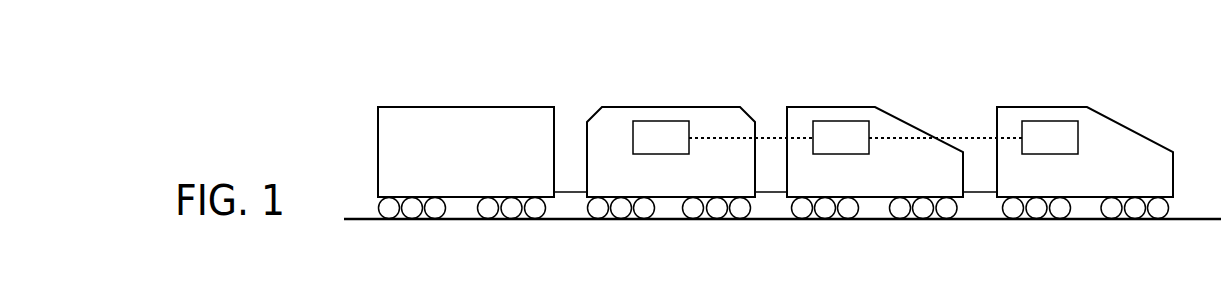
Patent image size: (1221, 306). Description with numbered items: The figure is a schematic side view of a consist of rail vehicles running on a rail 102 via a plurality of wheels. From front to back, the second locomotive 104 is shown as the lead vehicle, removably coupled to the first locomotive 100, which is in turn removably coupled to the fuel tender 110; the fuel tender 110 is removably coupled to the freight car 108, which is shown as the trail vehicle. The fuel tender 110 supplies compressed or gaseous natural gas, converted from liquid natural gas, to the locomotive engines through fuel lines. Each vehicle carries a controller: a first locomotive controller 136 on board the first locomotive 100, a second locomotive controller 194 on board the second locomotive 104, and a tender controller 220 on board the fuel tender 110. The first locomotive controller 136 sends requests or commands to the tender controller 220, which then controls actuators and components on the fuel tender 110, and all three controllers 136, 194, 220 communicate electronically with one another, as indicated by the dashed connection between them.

The first locomotive 100 is at (842, 106).
The rail 102 is at (970, 221).
The second locomotive 104 is at (1025, 106).
The freight car 108 is at (441, 106).
The fuel tender 110 is at (657, 106).
The first locomotive controller 136 is at (857, 148).
The second locomotive controller 194 is at (1066, 148).
The tender controller 220 is at (677, 148).